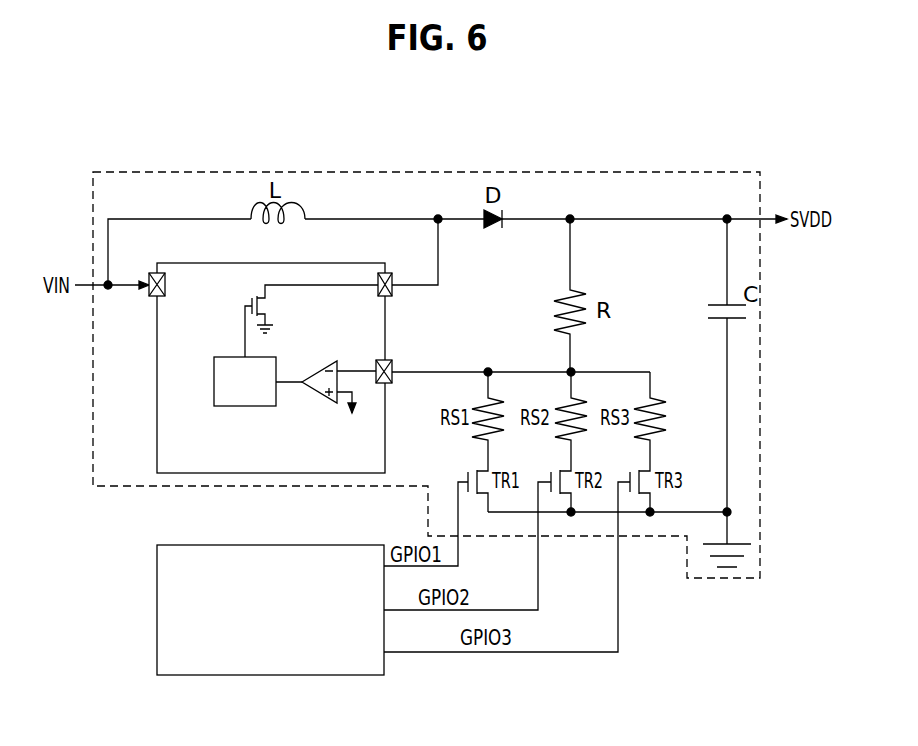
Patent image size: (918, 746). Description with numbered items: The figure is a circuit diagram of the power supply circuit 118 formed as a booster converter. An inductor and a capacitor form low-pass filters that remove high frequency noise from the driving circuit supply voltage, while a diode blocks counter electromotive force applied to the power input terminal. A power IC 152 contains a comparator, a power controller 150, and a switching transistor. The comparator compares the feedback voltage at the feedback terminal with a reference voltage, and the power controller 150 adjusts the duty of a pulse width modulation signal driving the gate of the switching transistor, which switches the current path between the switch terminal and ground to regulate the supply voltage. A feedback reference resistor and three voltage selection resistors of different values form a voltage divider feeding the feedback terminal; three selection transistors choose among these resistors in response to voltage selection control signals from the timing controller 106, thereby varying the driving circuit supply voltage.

The power supply circuit 118 is at (432, 172).
The power IC 152 is at (298, 365).
The power controller 150 is at (229, 394).
The timing controller 106 is at (255, 617).